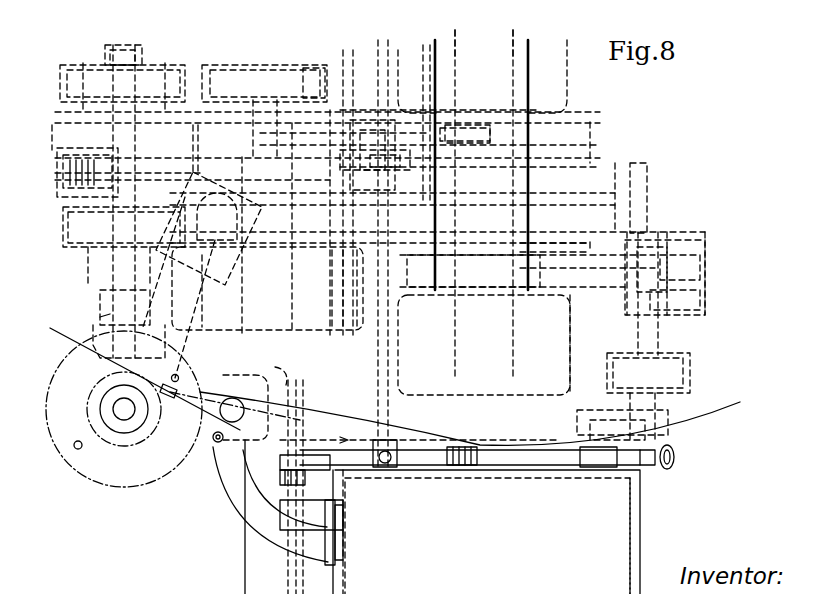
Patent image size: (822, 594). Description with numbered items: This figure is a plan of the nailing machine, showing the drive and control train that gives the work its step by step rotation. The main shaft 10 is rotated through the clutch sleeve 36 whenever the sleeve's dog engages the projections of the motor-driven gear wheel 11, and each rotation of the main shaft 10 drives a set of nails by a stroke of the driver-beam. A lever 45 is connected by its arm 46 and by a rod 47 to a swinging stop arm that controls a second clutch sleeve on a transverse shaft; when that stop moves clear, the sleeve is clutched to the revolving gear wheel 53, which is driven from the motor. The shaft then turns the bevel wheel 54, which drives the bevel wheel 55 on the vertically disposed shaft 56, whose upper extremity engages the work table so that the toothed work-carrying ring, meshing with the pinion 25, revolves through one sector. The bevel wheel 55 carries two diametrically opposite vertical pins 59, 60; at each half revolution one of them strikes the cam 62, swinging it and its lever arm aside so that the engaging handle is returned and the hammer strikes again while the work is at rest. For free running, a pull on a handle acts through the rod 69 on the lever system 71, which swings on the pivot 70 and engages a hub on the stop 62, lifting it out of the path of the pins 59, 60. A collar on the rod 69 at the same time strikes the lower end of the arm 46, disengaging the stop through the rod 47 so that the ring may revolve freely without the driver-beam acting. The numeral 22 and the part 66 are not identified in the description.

The main shaft 10 is at (510, 33).
The gear wheel 11 is at (637, 172).
The lever 22 is at (80, 339).
The pinion 25 is at (127, 446).
The clutch sleeve 36 is at (532, 278).
The lever 45 is at (478, 128).
The arm 46 is at (386, 165).
The rod 47 is at (190, 203).
The revolving gear wheel 53 is at (52, 133).
The bevel wheel 54 is at (110, 315).
The bevel wheel 55 is at (47, 412).
The vertically disposed shaft 56 is at (123, 409).
The vertical pin 59 is at (179, 377).
The vertical pin 60 is at (82, 449).
The cam 62 is at (161, 451).
The eye 66 is at (686, 460).
The rod 69 is at (338, 466).
The pivot 70 is at (290, 452).
The lever system 71 is at (283, 480).